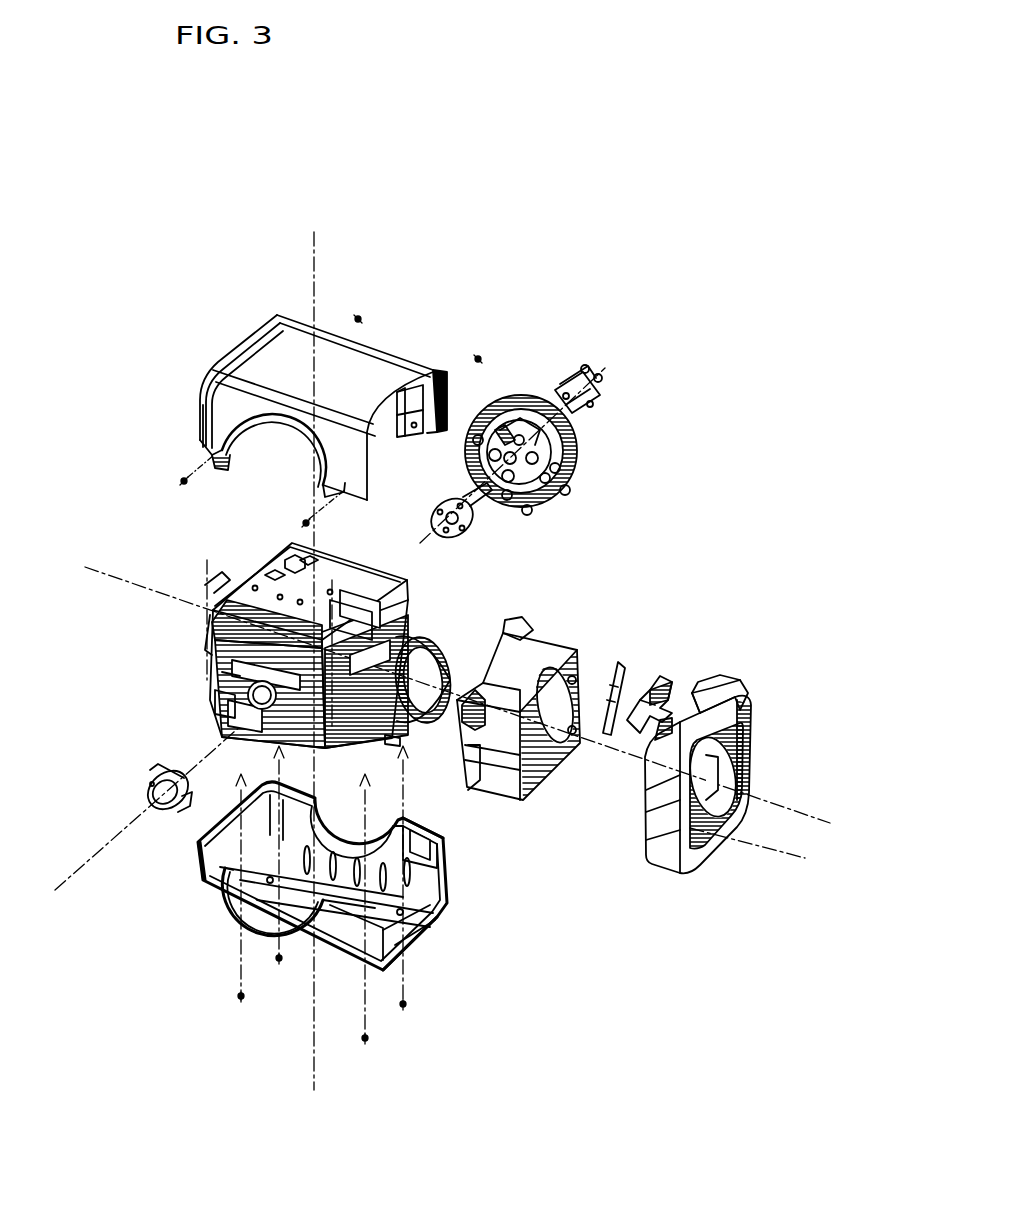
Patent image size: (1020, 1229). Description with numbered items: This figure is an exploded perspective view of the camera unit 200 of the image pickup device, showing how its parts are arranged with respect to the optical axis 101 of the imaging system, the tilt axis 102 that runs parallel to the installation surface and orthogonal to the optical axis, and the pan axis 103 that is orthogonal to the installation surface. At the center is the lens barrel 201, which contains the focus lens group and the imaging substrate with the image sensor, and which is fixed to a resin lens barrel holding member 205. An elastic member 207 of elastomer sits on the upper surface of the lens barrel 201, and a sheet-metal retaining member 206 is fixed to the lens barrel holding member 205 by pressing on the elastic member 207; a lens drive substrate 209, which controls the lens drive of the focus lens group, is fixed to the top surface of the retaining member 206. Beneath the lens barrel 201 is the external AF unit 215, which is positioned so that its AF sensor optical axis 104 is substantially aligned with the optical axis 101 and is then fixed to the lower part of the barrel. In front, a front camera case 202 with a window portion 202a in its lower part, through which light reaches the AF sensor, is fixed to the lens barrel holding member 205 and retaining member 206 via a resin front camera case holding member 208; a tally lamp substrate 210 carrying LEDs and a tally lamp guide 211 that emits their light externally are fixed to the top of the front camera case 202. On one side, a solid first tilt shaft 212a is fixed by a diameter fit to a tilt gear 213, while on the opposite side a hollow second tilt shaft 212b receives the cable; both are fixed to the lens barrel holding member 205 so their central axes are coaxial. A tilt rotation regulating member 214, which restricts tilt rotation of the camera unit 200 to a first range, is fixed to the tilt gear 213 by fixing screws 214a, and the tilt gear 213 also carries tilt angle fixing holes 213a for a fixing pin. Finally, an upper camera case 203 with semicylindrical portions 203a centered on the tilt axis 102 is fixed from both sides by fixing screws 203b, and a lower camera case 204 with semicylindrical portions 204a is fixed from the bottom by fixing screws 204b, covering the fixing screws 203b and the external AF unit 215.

The camera unit 200 is at (163, 272).
The optical axis 101 is at (830, 824).
The tilt axis 102 is at (618, 362).
The pan axis 103 is at (314, 222).
The AF sensor optical axis 104 is at (788, 856).
The lens barrel 201 is at (418, 640).
The front camera case 202 is at (722, 678).
The window portion 202a is at (721, 848).
The upper camera case 203 is at (278, 338).
The semicylindrical portions 203a is at (206, 375).
The fixing screws 203b is at (358, 316).
The lower camera case 204 is at (208, 896).
The semicylindrical portions 204a is at (218, 915).
The fixing screws 204b is at (403, 1012).
The lens barrel holding member 205 is at (218, 697).
The retaining member 206 is at (210, 593).
The elastic member 207 is at (348, 650).
The front camera case holding member 208 is at (547, 648).
The lens drive substrate 209 is at (258, 548).
The tally lamp substrate 210 is at (611, 662).
The tally lamp guide 211 is at (656, 672).
The first tilt shaft 212a is at (470, 534).
The second tilt shaft 212b is at (156, 790).
The tilt gear 213 is at (546, 448).
The tilt angle fixing holes 213a is at (476, 445).
The tilt rotation regulating member 214 is at (564, 388).
The fixing screws 214a is at (585, 365).
The external AF unit 215 is at (393, 745).